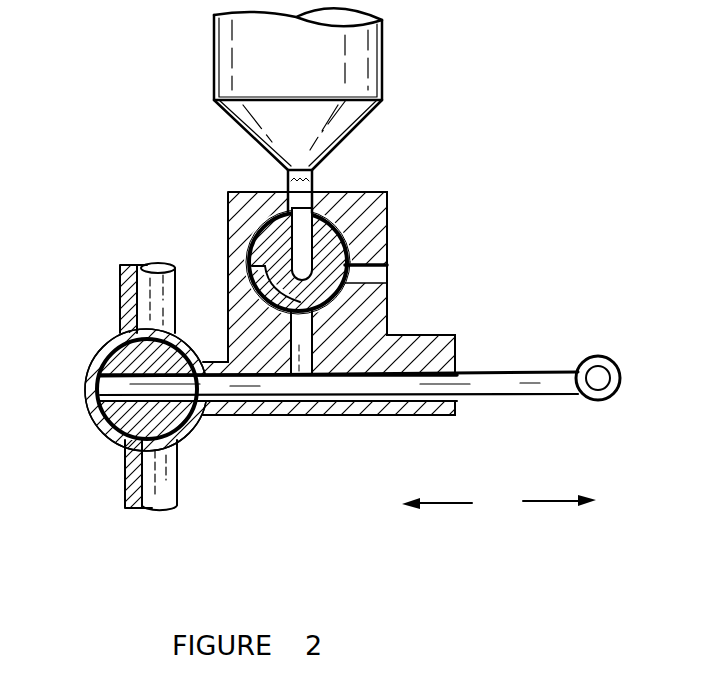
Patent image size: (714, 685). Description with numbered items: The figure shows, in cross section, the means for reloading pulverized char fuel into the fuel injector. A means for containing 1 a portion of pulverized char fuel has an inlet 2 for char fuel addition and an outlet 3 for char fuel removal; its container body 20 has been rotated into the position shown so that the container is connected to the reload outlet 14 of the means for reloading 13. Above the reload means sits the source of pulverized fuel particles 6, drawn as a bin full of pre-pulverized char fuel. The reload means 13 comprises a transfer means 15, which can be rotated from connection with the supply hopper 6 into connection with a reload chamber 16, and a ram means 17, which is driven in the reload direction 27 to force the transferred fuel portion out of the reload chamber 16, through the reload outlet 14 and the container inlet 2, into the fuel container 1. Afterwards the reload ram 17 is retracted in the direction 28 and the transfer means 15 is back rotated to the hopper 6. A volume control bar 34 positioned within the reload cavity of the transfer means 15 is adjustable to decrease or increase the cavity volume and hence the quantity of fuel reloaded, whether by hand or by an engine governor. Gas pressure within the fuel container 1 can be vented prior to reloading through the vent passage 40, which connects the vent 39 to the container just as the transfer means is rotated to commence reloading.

The means for containing 1 is at (108, 357).
The inlet 2 is at (197, 432).
The outlet 3 is at (97, 432).
The source of pulverized fuel particles 6 is at (333, 78).
The means for reloading 13 is at (389, 302).
The reload outlet 14 is at (274, 417).
The transfer means 15 is at (301, 254).
The reload chamber 16 is at (312, 417).
The ram means 17 is at (492, 387).
The container body 20 is at (117, 452).
The reload direction 27 is at (445, 505).
The retraction direction 28 is at (558, 503).
The volume control bar 34 is at (334, 200).
The vent 39 is at (372, 276).
The vent passage 40 is at (253, 285).